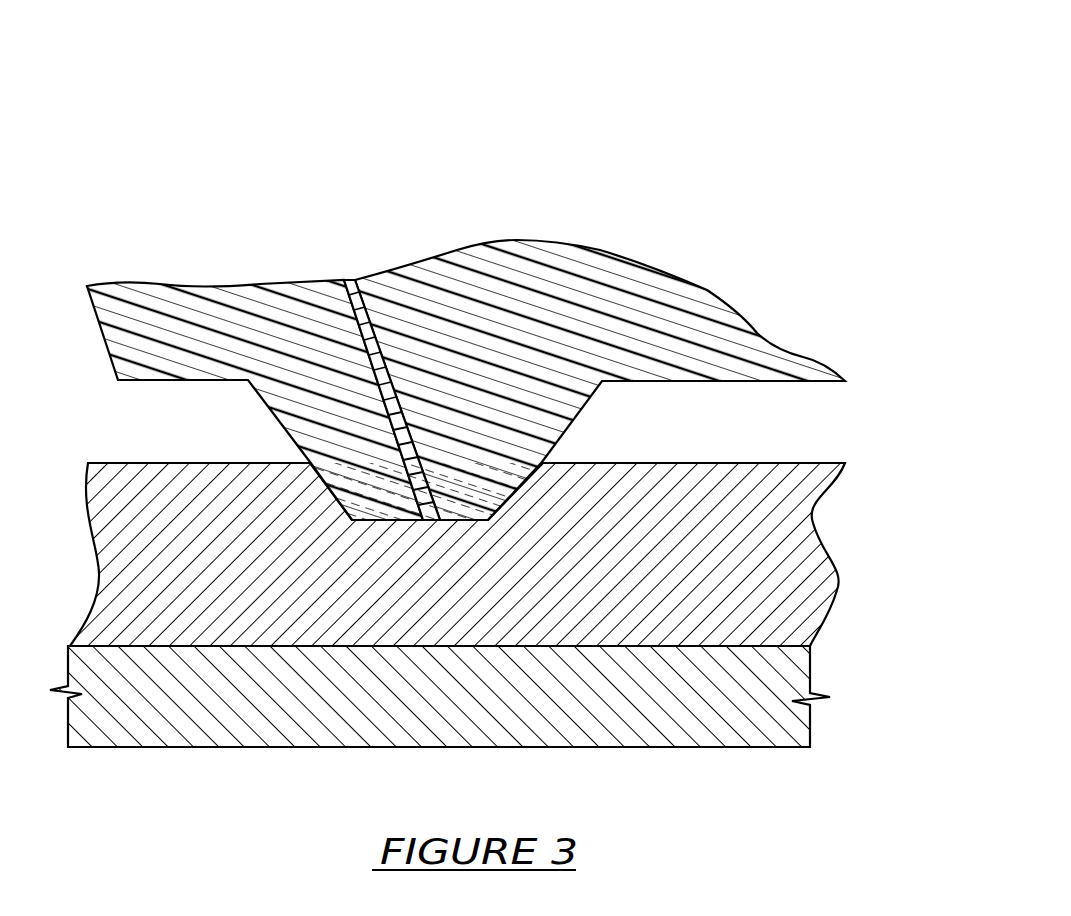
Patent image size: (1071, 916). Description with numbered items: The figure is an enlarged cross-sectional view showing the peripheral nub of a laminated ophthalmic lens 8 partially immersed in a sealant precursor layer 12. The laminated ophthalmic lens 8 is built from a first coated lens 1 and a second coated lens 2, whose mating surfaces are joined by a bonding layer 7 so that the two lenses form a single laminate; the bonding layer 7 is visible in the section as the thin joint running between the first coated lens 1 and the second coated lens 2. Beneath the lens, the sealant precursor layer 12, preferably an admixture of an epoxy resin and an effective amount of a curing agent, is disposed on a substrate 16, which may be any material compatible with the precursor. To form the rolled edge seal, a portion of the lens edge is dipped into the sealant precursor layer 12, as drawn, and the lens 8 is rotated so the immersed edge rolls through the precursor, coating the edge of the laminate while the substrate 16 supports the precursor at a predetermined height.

The first coated lens 1 is at (270, 308).
The second coated lens 2 is at (615, 362).
The bonding layer 7 is at (343, 280).
The laminated ophthalmic lens 8 is at (665, 122).
The sealant precursor layer 12 is at (737, 607).
The substrate 16 is at (303, 707).